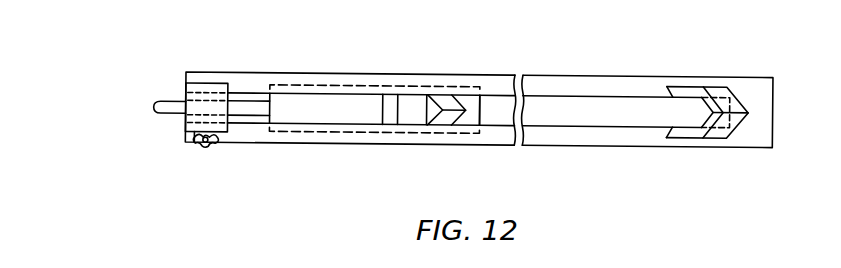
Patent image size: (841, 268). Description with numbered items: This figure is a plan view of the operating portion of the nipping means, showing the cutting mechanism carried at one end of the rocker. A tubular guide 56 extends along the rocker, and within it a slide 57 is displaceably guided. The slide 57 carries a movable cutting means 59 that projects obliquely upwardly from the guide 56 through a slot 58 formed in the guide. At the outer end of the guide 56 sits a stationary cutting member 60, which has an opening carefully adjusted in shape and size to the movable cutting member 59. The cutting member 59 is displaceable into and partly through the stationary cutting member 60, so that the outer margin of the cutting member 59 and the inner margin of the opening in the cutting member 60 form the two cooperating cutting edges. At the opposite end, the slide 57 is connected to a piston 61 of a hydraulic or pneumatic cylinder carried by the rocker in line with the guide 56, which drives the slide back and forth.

The tubular guide 56 is at (370, 72).
The slide 57 is at (478, 98).
The slot 58 is at (540, 100).
The movable cutting means 59 is at (447, 100).
The stationary cutting member 60 is at (723, 85).
The piston 61 is at (167, 101).